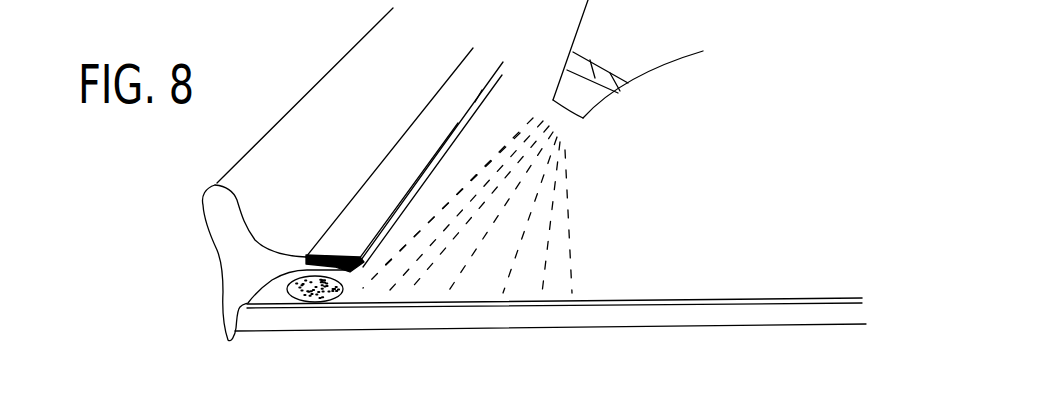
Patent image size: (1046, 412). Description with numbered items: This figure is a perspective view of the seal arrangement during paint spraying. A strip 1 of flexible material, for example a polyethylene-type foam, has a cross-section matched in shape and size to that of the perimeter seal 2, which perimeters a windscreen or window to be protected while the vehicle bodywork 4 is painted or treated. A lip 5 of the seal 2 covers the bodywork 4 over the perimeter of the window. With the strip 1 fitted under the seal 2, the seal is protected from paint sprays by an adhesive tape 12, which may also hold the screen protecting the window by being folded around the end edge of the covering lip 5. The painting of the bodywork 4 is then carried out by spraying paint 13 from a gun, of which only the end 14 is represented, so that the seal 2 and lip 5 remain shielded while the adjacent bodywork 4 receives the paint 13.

The strip 1 is at (321, 291).
The perimeter seal 2 is at (199, 242).
The vehicle bodywork 4 is at (680, 322).
The lip 5 is at (333, 268).
The adhesive tape 12 is at (395, 172).
The paint 13 is at (593, 241).
The end of the gun 14 is at (688, 60).